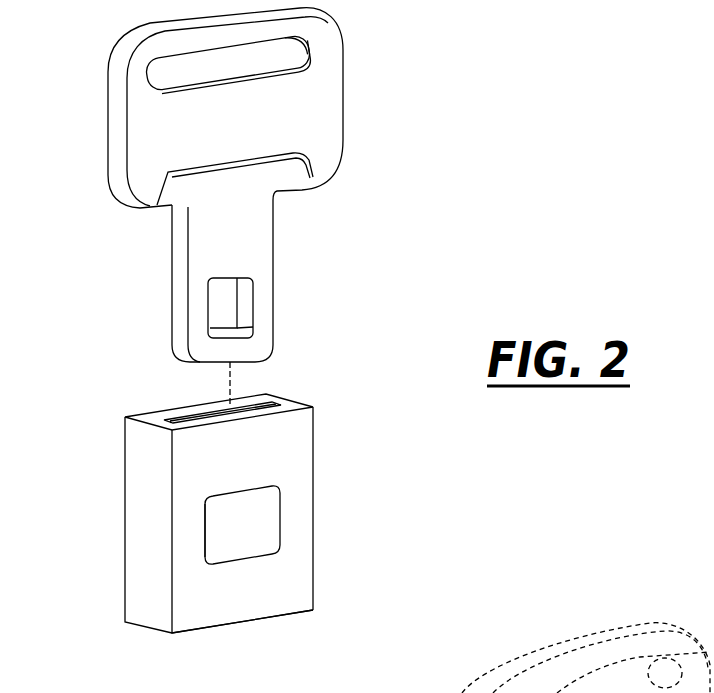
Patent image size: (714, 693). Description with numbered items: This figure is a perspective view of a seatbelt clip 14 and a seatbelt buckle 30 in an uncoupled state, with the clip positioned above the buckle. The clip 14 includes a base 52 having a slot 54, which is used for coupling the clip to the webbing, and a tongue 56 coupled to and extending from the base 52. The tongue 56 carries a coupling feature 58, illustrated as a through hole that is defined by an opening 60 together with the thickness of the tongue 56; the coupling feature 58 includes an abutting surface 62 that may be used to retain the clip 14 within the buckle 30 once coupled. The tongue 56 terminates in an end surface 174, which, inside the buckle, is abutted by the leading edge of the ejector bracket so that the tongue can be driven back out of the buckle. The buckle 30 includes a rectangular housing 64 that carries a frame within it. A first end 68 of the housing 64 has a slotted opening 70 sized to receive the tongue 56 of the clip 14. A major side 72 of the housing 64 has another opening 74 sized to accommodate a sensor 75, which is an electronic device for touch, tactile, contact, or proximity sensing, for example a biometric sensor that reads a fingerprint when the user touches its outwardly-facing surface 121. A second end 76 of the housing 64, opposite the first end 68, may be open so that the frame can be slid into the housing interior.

The clip 14 is at (386, 218).
The base 52 is at (343, 108).
The slot 54 is at (277, 52).
The tongue 56 is at (275, 256).
The coupling feature 58 is at (200, 317).
The opening 60 is at (245, 306).
The abutting surface 62 is at (222, 333).
The end surface 174 is at (270, 368).
The buckle 30 is at (101, 500).
The housing 64 is at (292, 448).
The first end 68 is at (292, 403).
The slotted opening 70 is at (176, 418).
The major side 72 is at (292, 588).
The opening 74 is at (275, 535).
The sensor 75 is at (227, 538).
The second end 76 is at (252, 630).
The outwardly-facing surface 121 is at (237, 507).